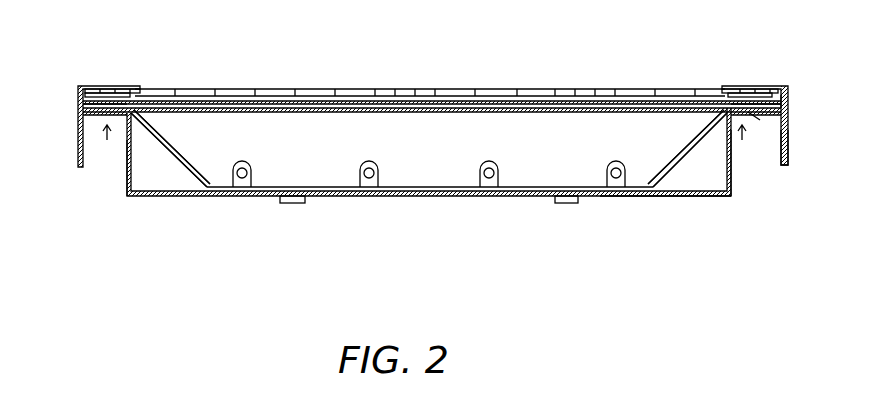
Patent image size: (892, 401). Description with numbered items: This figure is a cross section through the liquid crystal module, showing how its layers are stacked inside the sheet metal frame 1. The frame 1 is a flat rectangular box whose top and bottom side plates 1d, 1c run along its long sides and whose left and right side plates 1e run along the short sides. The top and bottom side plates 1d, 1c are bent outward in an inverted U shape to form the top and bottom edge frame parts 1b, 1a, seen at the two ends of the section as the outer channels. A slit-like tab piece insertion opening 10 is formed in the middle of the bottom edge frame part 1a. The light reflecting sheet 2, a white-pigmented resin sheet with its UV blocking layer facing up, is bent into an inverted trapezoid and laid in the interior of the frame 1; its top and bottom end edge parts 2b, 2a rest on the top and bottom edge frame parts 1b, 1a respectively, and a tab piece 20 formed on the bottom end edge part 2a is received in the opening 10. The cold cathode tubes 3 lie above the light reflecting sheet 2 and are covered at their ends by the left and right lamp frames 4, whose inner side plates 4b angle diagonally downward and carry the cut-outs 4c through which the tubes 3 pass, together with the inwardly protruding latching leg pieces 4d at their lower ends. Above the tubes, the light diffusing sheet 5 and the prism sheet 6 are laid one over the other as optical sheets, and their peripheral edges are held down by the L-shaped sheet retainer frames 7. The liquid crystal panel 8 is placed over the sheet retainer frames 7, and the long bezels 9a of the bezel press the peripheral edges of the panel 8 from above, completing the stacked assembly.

The frame 1 is at (158, 198).
The bottom edge frame part 1a is at (788, 160).
The top edge frame part 1b is at (100, 142).
The bottom side plate 1c is at (734, 150).
The top side plate 1d is at (122, 172).
The left and right side plates 1e is at (703, 198).
The light reflecting sheet 2 is at (490, 194).
The bottom end edge part 2a is at (788, 88).
The top end edge part 2b is at (84, 86).
The cold cathode tube 3 is at (338, 192).
The lamp frame 4 is at (386, 101).
The inner side plate 4b is at (428, 192).
The cut-out 4c is at (366, 182).
The latching leg piece 4d is at (290, 205).
The light diffusing sheet 5 is at (585, 108).
The prism sheet 6 is at (485, 104).
The sheet retainer frame 7 is at (108, 89).
The liquid crystal panel 8 is at (304, 89).
The long bezel 9a is at (132, 86).
The tab piece insertion opening 10 is at (790, 102).
The tab piece 20 is at (790, 130).